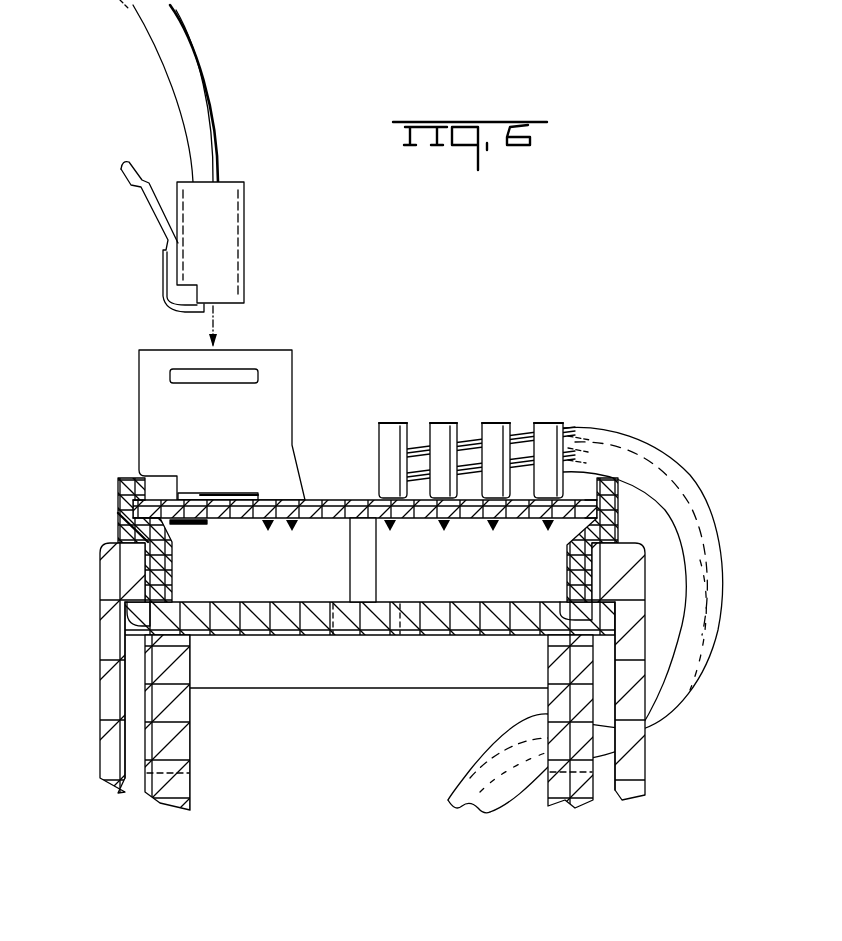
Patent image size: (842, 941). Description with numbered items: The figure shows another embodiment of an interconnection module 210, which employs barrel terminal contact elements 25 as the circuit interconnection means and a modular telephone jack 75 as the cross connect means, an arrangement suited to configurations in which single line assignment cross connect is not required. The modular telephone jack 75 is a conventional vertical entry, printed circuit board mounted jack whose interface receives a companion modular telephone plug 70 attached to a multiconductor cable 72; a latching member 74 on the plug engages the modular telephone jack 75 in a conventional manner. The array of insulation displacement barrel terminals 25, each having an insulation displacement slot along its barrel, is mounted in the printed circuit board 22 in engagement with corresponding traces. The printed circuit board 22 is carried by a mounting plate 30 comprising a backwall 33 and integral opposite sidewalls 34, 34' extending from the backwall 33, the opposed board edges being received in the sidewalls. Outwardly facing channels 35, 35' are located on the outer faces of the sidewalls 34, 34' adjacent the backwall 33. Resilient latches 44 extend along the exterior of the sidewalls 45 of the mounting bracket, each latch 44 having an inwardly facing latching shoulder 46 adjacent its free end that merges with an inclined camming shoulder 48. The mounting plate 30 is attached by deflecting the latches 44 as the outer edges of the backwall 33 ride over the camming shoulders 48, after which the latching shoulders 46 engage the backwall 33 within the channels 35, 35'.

The interconnection module 210 is at (505, 322).
The multiconductor cable 72 is at (197, 95).
The modular telephone plug 70 is at (227, 242).
The latching member 74 is at (143, 222).
The modular telephone jack 75 is at (155, 420).
The insulation displacement barrel terminal 25 is at (438, 430).
The printed circuit board 22 is at (322, 522).
The mounting plate 30 is at (466, 596).
The backwall 33 is at (415, 608).
The sidewall 34 is at (111, 536).
The sidewall 34' is at (642, 519).
The outwardly facing channel 35 is at (105, 530).
The outwardly facing channel 35' is at (624, 520).
The resilient latch 44 is at (102, 593).
The sidewall 45 is at (168, 793).
The latching shoulder 46 is at (147, 617).
The inclined camming shoulder 48 is at (122, 575).